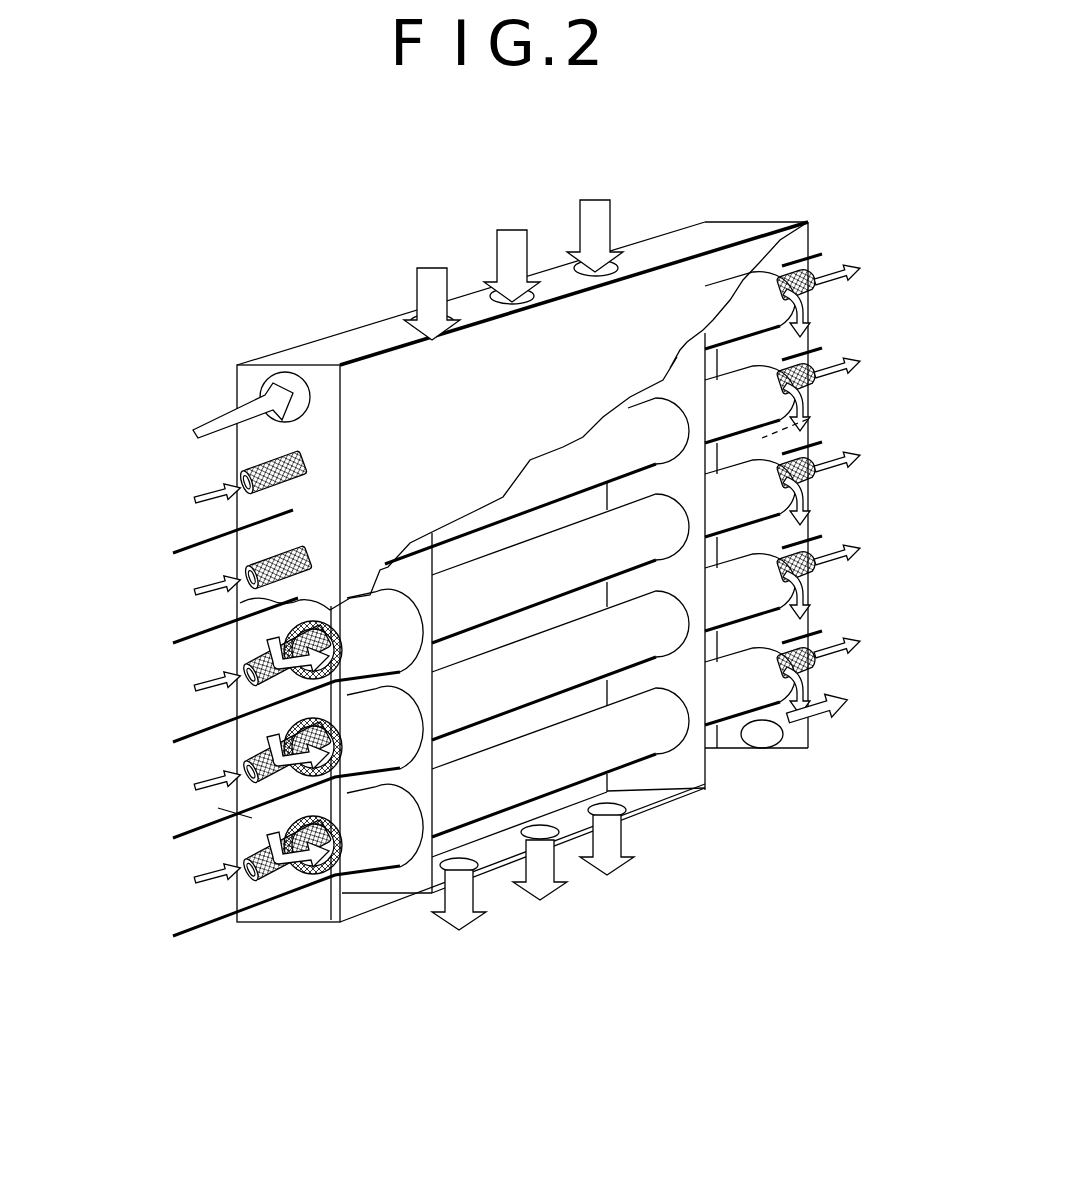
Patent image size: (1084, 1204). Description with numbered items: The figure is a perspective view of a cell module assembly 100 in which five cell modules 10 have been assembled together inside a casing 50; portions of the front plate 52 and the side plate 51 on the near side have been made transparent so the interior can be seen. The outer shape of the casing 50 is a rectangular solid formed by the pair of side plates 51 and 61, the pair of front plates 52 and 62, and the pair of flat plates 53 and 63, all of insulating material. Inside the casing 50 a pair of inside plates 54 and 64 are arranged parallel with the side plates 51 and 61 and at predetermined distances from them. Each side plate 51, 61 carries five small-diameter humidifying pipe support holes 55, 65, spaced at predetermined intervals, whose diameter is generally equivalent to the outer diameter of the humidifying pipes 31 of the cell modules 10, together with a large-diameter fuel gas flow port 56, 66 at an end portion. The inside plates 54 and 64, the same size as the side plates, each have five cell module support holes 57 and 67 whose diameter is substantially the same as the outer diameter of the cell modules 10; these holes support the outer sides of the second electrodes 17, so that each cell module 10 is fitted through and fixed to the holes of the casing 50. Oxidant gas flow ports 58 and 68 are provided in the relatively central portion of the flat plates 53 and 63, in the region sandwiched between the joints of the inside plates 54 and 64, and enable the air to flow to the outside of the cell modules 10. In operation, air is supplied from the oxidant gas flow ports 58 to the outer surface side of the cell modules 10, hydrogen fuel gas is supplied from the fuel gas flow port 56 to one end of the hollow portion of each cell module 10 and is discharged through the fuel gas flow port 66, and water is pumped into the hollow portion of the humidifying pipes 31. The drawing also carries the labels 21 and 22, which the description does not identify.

The cell module assembly 100 is at (716, 950).
The cell module 10 is at (752, 676).
The second electrode 17 is at (727, 705).
The water supply tube 21 is at (812, 550).
The coil portion 22 is at (190, 828).
The humidifying pipe 31 is at (245, 860).
The casing 50 is at (326, 930).
The side plate 51 is at (245, 377).
The front plate 52 is at (667, 300).
The flat plate 53 is at (365, 350).
The inside plate 54 is at (402, 858).
The humidifying pipe support hole 55 is at (308, 560).
The fuel gas flow port 56 is at (280, 382).
The cell module support hole 57 is at (435, 705).
The oxidant gas flow port 58 is at (405, 315).
The side plate 61 is at (812, 418).
The front plate 62 is at (642, 303).
The flat plate 63 is at (483, 850).
The inside plate 64 is at (690, 760).
The humidifying pipe support hole 65 is at (813, 480).
The fuel gas flow port 66 is at (767, 737).
The cell module support hole 67 is at (684, 632).
The oxidant gas flow port 68 is at (563, 840).